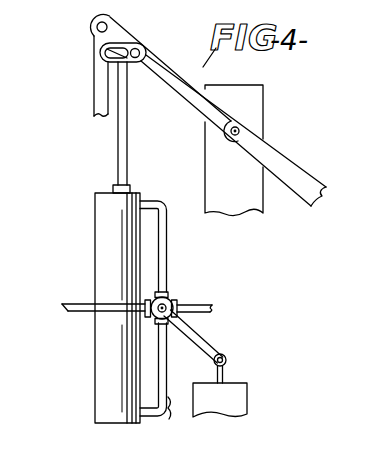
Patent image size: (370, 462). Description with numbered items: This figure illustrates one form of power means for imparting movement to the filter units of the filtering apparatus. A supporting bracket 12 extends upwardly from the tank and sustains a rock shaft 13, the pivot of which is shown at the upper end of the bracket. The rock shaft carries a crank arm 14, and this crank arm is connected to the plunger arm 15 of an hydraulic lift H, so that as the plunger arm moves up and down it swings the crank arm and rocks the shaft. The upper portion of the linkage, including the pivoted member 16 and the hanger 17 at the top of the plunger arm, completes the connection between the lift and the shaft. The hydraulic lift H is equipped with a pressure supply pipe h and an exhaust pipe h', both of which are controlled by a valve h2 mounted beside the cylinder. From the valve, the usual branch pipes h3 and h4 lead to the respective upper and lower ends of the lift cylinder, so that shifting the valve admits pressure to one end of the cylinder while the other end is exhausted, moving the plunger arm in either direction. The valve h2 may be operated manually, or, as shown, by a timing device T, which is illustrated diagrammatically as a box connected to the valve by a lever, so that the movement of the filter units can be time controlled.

The supporting bracket 12 is at (247, 199).
The rock shaft 13 is at (240, 128).
The crank arm 14 is at (190, 97).
The plunger arm 15 is at (118, 157).
The lever arm 16 is at (290, 177).
The bracket 17 is at (98, 91).
The hydraulic lift H is at (90, 272).
The pressure supply pipe h is at (96, 327).
The exhaust pipe h' is at (206, 304).
The valve h2 is at (170, 299).
The branch pipe h3 is at (177, 231).
The branch pipe h4 is at (157, 385).
The timing device T is at (247, 398).